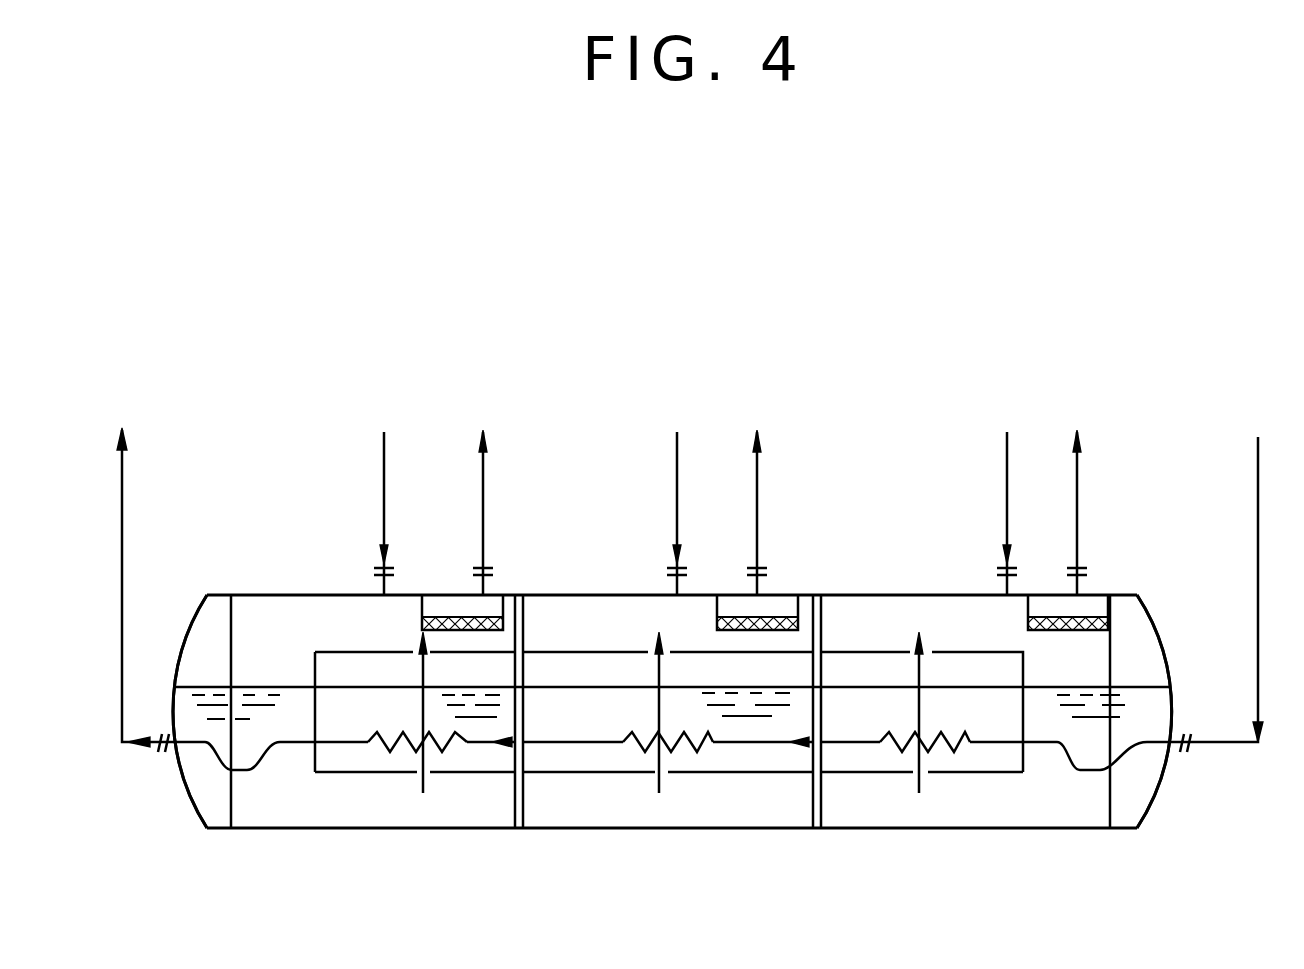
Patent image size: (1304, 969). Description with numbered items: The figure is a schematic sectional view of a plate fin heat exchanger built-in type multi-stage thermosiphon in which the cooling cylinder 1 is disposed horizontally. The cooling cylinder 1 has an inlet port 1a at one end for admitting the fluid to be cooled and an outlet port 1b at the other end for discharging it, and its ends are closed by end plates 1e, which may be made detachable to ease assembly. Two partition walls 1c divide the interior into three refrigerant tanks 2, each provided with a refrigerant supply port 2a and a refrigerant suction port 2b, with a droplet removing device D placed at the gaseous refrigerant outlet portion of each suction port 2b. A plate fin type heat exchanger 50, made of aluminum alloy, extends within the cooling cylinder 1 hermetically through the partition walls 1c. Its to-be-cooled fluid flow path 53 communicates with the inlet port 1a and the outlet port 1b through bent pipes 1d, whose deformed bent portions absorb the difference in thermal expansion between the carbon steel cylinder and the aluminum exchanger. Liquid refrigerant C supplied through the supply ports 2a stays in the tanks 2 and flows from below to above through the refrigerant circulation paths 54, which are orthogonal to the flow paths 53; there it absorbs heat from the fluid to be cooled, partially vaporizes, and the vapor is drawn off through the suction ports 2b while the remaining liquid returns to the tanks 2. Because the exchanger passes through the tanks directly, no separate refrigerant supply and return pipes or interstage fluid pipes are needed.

The cooling cylinder 1 is at (908, 840).
The inlet port 1a is at (1189, 752).
The outlet port 1b is at (158, 752).
The partition wall 1c is at (513, 792).
The bent pipe 1d is at (250, 772).
The end plate 1e is at (190, 802).
The refrigerant tank 2 is at (259, 595).
The refrigerant supply port 2a is at (374, 568).
The refrigerant suction port 2b is at (490, 568).
The plate fin type heat exchanger 50 is at (973, 652).
The flow path of fluid to be cooled 53 is at (388, 746).
The refrigerant circulation path 54 is at (418, 672).
The refrigerant C is at (307, 800).
The droplet removing device D is at (445, 612).